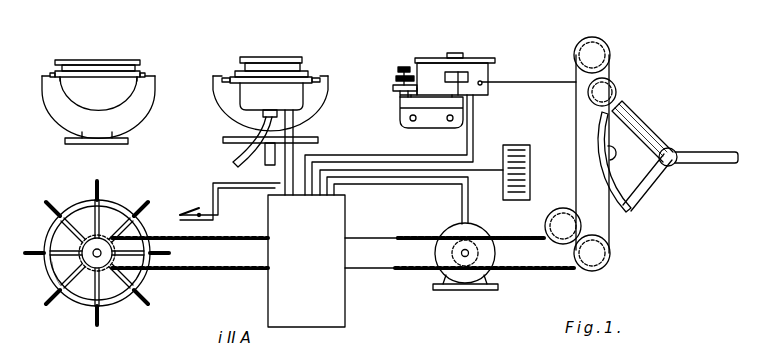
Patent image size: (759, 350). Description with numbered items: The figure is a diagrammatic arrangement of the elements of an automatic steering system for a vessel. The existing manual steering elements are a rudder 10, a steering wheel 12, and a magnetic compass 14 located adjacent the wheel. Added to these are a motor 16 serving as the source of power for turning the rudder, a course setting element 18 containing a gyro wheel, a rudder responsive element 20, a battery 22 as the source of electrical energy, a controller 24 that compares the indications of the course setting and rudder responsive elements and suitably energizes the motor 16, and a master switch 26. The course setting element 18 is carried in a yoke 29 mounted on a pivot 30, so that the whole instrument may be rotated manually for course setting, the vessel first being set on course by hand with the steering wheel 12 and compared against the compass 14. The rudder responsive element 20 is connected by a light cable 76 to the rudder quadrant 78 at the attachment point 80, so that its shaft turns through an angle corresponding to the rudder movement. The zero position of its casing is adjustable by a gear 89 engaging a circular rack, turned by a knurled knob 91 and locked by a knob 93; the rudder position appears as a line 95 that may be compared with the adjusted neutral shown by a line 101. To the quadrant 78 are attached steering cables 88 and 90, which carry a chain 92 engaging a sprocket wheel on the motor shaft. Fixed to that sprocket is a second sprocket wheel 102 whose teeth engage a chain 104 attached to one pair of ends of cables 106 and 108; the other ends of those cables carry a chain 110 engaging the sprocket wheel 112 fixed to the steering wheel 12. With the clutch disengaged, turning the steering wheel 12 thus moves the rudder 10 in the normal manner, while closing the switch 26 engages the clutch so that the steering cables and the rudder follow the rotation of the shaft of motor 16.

The rudder 10 is at (717, 163).
The steering wheel 12 is at (72, 205).
The magnetic compass 14 is at (92, 60).
The motor 16 is at (466, 284).
The course setting element 18 is at (267, 57).
The rudder responsive element 20 is at (426, 59).
The battery 22 is at (520, 145).
The controller 24 is at (308, 265).
The master switch 26 is at (185, 212).
The yoke 29 is at (282, 152).
The pivot 30 is at (252, 148).
The cable 76 is at (519, 82).
The rudder quadrant 78 is at (660, 131).
The attachment point 80 is at (612, 153).
The steering cable 88 is at (576, 153).
The gear 89 is at (395, 90).
The steering cable 90 is at (610, 228).
The knurled knob 91 is at (398, 79).
The chain 92 is at (505, 238).
The knob 93 is at (400, 68).
The line 95 is at (462, 74).
The line 101 is at (450, 57).
The second sprocket wheel 102 is at (480, 250).
The chain 104 is at (415, 237).
The cable 106 is at (360, 237).
The cable 108 is at (460, 286).
The chain 110 is at (165, 271).
The sprocket wheel 112 is at (72, 303).